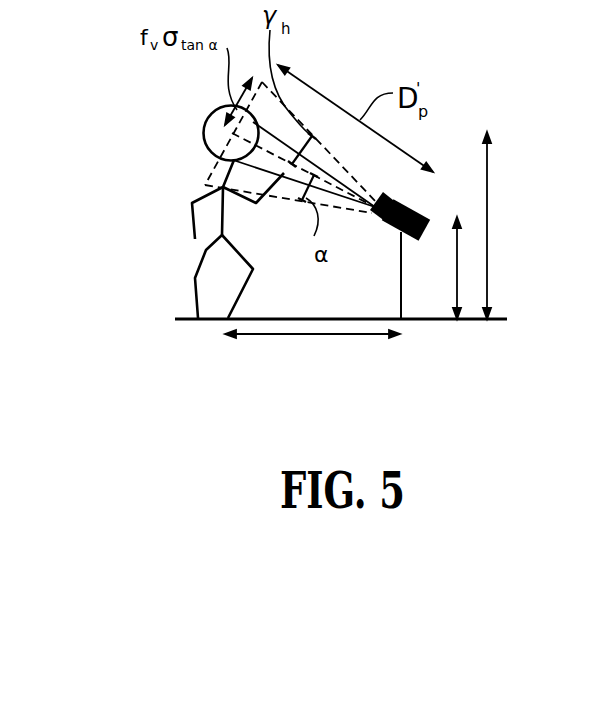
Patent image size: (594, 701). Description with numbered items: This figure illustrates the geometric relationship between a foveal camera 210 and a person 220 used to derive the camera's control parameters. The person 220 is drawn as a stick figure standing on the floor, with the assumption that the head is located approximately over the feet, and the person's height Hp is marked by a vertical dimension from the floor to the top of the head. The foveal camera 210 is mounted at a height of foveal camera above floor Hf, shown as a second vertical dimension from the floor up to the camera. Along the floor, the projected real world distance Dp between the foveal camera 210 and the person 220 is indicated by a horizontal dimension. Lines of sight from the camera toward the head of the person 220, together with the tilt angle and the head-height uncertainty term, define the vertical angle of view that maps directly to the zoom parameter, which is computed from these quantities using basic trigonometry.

The foveal camera 210 is at (423, 210).
The person 220 is at (204, 253).
The height of foveal camera above floor Hf is at (458, 290).
The person's height Hp is at (488, 255).
The projected real world distance Dp is at (318, 338).